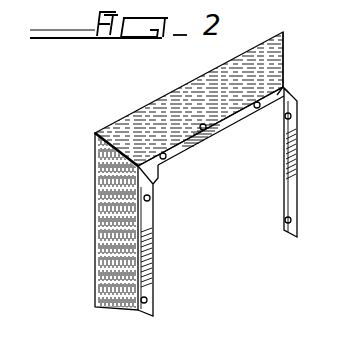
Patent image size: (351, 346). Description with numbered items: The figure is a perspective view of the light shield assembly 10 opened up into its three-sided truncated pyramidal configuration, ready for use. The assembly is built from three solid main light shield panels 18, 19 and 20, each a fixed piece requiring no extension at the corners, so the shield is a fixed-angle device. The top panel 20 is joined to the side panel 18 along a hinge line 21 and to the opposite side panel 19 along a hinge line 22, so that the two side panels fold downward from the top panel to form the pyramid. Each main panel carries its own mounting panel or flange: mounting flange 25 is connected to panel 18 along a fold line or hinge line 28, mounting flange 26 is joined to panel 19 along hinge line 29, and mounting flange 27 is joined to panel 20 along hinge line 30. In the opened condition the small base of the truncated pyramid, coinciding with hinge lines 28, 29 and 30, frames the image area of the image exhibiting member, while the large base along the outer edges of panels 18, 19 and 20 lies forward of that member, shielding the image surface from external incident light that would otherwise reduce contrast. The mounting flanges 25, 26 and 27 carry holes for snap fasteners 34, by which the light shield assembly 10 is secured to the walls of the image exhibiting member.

The light shield assembly 10 is at (232, 248).
The light shield panel 18 is at (287, 86).
The light shield panel 19 is at (104, 227).
The light shield panel 20 is at (167, 100).
The hinge line 21 is at (285, 52).
The hinge line 22 is at (97, 138).
The mounting flange 25 is at (297, 160).
The mounting flange 26 is at (149, 272).
The mounting flange 27 is at (228, 122).
The hinge line 28 is at (282, 168).
The hinge line 29 is at (136, 226).
The hinge line 30 is at (207, 132).
The snap fasteners 34 is at (291, 116).